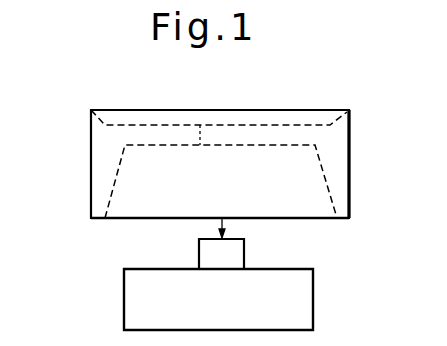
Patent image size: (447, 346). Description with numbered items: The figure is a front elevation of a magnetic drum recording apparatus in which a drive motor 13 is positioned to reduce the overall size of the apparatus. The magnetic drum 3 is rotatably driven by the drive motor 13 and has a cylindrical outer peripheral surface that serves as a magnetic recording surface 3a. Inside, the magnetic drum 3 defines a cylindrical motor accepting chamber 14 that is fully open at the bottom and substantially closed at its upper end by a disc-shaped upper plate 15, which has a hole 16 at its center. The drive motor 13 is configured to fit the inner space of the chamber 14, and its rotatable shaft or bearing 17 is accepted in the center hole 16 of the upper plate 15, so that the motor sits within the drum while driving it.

The magnetic drum 3 is at (321, 108).
The magnetic recording surface 3a is at (351, 168).
The drive motor 13 is at (300, 314).
The motor accepting chamber 14 is at (325, 187).
The upper plate 15 is at (170, 133).
The hole 16 is at (238, 142).
The rotatable shaft or bearing 17 is at (236, 256).